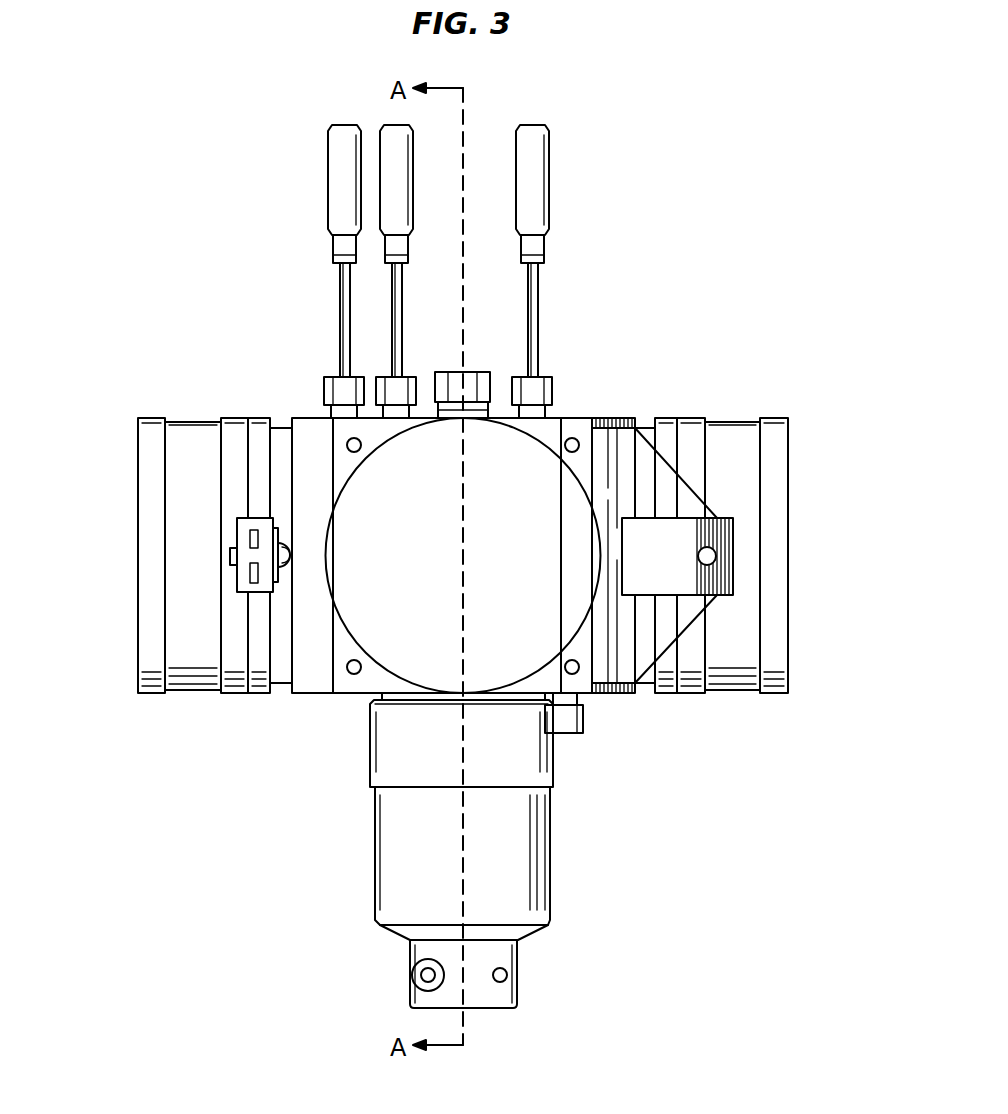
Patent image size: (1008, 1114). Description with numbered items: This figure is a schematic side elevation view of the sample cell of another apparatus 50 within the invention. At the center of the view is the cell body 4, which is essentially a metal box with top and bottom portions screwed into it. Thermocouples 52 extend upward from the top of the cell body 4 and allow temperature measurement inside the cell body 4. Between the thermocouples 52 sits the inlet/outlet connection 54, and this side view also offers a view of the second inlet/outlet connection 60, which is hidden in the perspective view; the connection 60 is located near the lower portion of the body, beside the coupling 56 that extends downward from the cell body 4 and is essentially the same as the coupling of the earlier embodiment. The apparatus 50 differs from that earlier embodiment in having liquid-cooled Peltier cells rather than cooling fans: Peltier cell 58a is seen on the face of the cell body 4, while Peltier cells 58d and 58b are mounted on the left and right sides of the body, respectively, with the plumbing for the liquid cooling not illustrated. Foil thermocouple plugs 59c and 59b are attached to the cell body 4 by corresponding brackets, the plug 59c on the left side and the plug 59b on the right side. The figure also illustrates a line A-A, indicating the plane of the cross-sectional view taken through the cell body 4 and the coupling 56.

The apparatus 50 is at (651, 154).
The thermocouples 52 is at (523, 161).
The inlet/outlet connection 54 is at (483, 372).
The cell body 4 is at (605, 418).
The liquid-cooled Peltier cell 58a is at (541, 562).
The liquid-cooled Peltier cell 58d is at (137, 512).
The foil thermocouple plug 59c is at (235, 578).
The liquid-cooled Peltier cell 58b is at (788, 512).
The foil thermocouple plug 59b is at (733, 556).
The inlet/outlet connection 60 is at (580, 735).
The coupling 56 is at (525, 873).